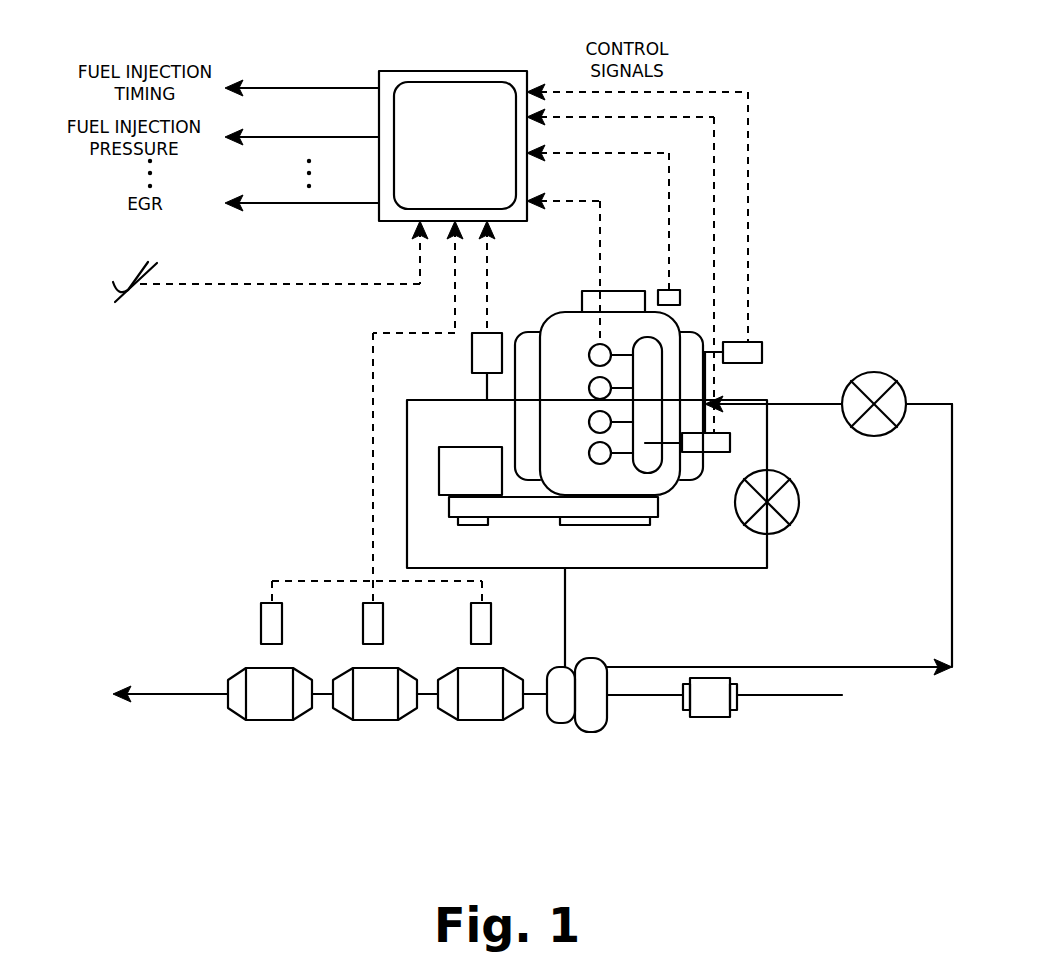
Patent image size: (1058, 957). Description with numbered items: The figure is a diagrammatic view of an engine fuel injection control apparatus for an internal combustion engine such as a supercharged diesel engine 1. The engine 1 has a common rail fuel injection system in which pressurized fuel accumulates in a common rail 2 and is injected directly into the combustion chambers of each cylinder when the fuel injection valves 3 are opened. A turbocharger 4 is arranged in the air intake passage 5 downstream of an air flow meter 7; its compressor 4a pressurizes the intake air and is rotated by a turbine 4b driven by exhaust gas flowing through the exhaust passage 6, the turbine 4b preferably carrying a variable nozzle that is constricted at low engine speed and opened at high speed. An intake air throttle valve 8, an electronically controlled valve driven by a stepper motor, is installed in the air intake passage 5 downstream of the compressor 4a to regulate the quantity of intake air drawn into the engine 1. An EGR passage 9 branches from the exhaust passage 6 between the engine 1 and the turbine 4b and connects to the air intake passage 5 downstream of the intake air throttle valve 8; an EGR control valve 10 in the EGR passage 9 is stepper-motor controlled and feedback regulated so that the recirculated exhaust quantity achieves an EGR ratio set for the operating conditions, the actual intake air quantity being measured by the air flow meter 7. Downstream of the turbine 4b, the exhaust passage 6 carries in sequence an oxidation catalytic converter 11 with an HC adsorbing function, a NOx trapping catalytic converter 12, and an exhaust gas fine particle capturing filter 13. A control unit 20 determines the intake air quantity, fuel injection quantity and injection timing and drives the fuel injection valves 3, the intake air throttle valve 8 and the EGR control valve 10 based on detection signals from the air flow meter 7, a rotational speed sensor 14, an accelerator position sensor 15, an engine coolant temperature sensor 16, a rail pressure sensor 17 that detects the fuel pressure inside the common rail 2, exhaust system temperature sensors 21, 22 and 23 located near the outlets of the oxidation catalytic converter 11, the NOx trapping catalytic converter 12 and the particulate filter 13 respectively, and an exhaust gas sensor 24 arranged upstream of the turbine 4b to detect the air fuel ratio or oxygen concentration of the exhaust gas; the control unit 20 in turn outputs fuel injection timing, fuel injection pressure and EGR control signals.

The supercharged diesel engine 1 is at (677, 487).
The common rail 2 is at (647, 442).
The fuel injection valves 3 is at (588, 455).
The turbocharger 4 is at (573, 755).
The compressor 4a is at (590, 732).
The turbine 4b is at (558, 733).
The air intake passage 5 is at (822, 695).
The exhaust passage 6 is at (565, 618).
The air flow meter 7 is at (715, 717).
The intake air throttle valve 8 is at (876, 437).
The EGR passage 9 is at (723, 572).
The EGR control valve 10 is at (775, 535).
The oxidation catalytic converter 11 is at (483, 720).
The NOx trapping catalytic converter 12 is at (373, 720).
The exhaust gas fine particle capturing filter 13 is at (273, 720).
The rotational speed sensor 14 is at (674, 290).
The accelerator position sensor 15 is at (130, 292).
The engine coolant temperature sensor 16 is at (762, 342).
The rail pressure sensor 17 is at (730, 447).
The control unit 20 is at (440, 71).
The exhaust system temperature sensor 21 is at (491, 621).
The exhaust system temperature sensor 22 is at (383, 621).
The exhaust system temperature sensor 23 is at (282, 621).
The exhaust gas sensor 24 is at (472, 356).